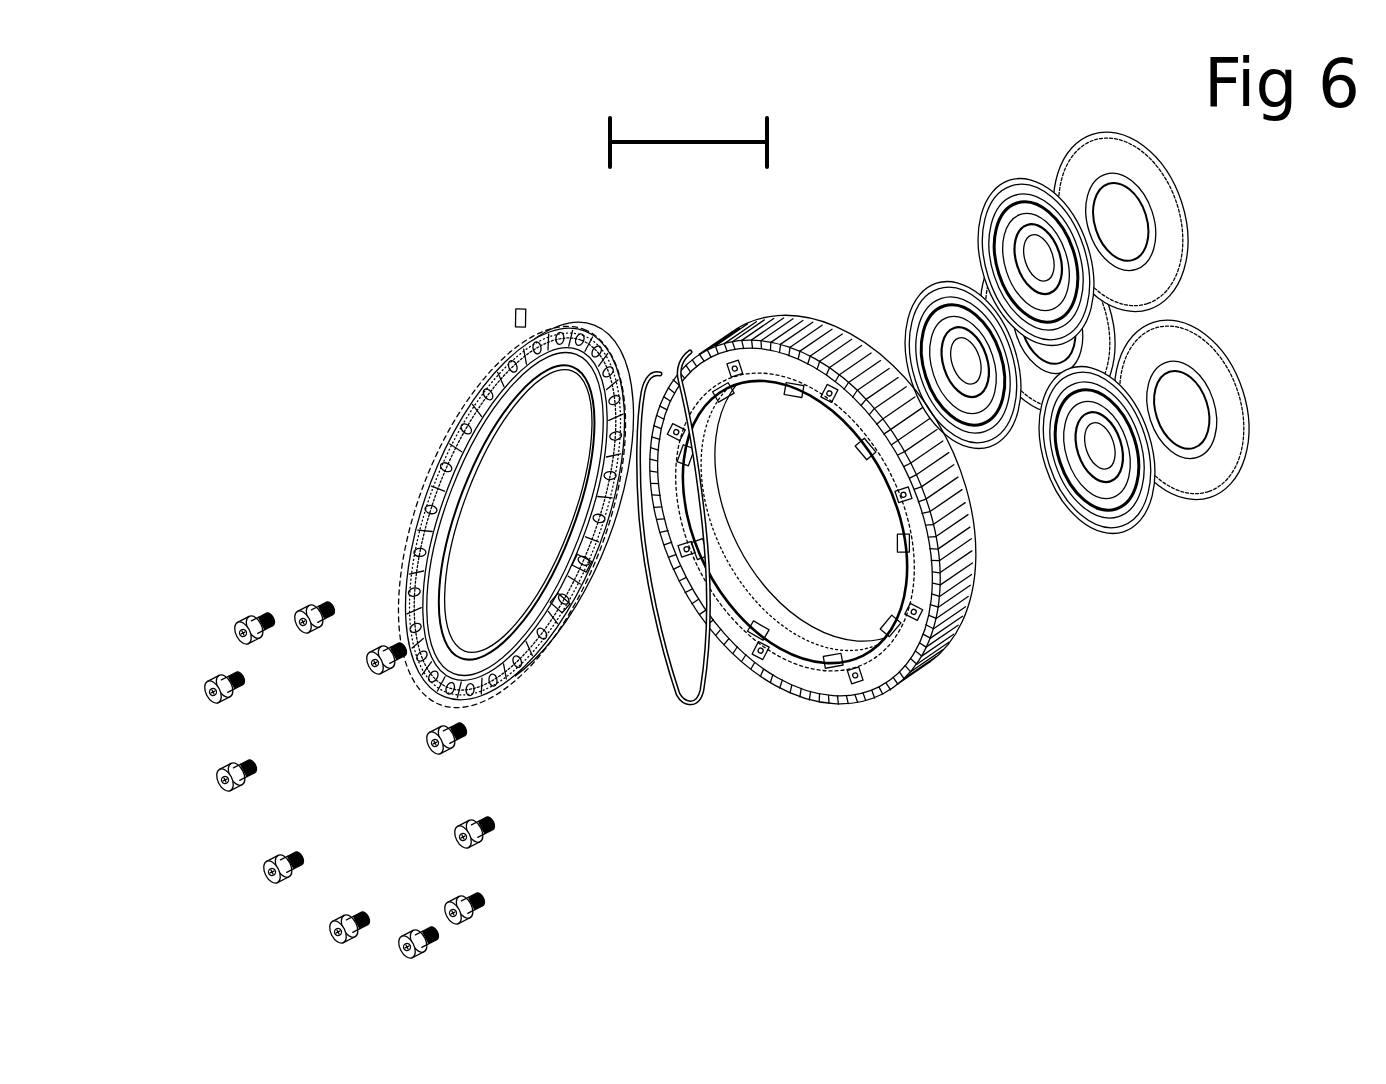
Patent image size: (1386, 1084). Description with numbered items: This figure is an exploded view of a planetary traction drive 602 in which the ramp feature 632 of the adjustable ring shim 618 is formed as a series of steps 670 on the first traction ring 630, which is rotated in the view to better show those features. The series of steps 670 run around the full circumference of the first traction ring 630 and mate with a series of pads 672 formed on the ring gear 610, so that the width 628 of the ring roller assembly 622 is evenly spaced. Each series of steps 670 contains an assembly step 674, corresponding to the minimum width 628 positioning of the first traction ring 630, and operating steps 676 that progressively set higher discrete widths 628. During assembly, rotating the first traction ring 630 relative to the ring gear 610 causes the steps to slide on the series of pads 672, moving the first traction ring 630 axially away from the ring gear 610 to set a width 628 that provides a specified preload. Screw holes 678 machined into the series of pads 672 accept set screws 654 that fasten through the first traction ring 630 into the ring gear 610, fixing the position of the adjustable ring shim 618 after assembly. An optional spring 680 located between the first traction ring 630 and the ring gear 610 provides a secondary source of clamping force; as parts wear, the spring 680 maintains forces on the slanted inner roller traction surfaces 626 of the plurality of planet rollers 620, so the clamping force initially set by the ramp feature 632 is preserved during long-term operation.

The planetary traction drive 602 is at (297, 212).
The ring gear 610 is at (972, 558).
The adjustable ring shim 618 is at (528, 677).
The plurality of planet rollers 620 is at (1129, 394).
The ring roller assembly 622 is at (705, 319).
The slanted inner roller traction surfaces 626 is at (1223, 308).
The width 628 is at (666, 140).
The first traction ring 630 is at (415, 535).
The ramp feature 632 is at (477, 672).
The set screws 654 is at (283, 858).
The series of steps 670 is at (563, 367).
The series of pads 672 is at (723, 332).
The assembly step 674 is at (482, 400).
The operating steps 676 is at (450, 463).
The screw holes 678 is at (733, 617).
The spring 680 is at (703, 710).